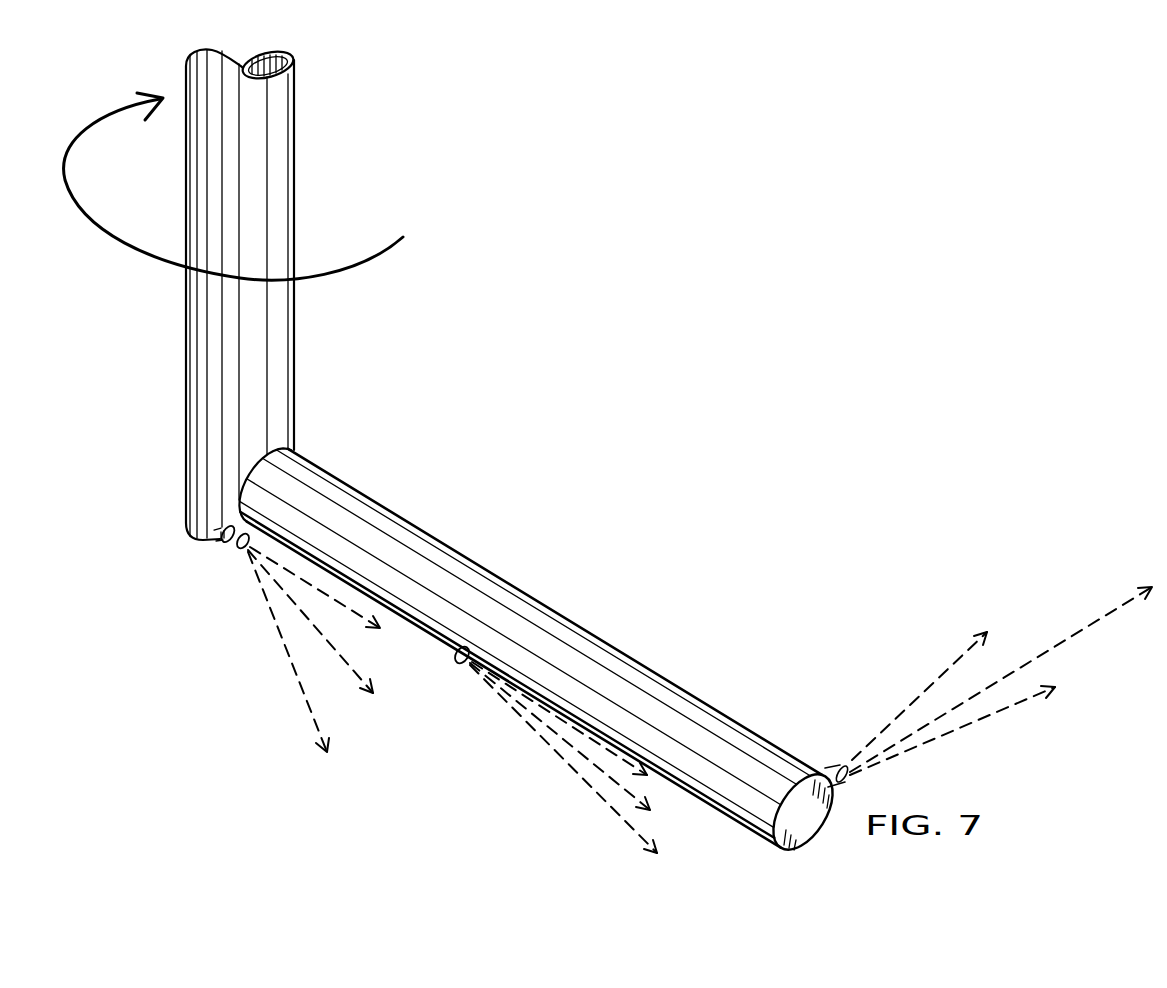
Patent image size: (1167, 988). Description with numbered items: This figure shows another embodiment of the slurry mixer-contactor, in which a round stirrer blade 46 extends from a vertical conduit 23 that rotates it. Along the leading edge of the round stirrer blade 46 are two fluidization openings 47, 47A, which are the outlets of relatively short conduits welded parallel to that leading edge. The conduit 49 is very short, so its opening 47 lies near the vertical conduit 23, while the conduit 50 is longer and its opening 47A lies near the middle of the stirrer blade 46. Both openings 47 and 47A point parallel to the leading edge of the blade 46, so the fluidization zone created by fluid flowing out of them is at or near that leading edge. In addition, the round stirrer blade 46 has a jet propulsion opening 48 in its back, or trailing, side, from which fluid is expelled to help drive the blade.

The vertical conduit 23 is at (278, 163).
The round stirrer blade 46 is at (485, 578).
The fluidization opening 47 is at (243, 553).
The fluidization opening 47A is at (470, 670).
The jet propulsion opening 48 is at (850, 762).
The conduit 49 is at (225, 548).
The conduit 50 is at (402, 630).